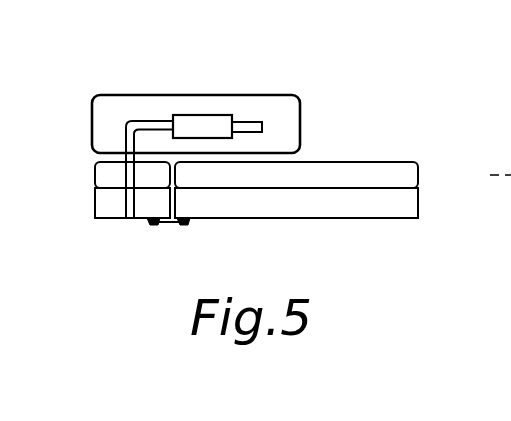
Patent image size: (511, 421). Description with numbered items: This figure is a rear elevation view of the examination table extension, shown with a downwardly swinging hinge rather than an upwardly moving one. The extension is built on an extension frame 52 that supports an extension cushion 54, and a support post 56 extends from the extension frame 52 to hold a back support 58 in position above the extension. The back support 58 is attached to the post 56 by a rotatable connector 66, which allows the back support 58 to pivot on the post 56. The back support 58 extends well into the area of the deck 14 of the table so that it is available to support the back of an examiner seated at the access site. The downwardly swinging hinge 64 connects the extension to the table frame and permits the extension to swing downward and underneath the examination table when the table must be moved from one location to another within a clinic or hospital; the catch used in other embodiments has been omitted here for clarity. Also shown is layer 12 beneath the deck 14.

The substrate 12 is at (415, 205).
The deck 14 is at (415, 182).
The extension frame 52 is at (100, 205).
The extension cushion 54 is at (107, 170).
The support post 56 is at (126, 135).
The back support 58 is at (288, 122).
The downwardly swinging hinge 64 is at (193, 232).
The rotatable connector 66 is at (210, 120).